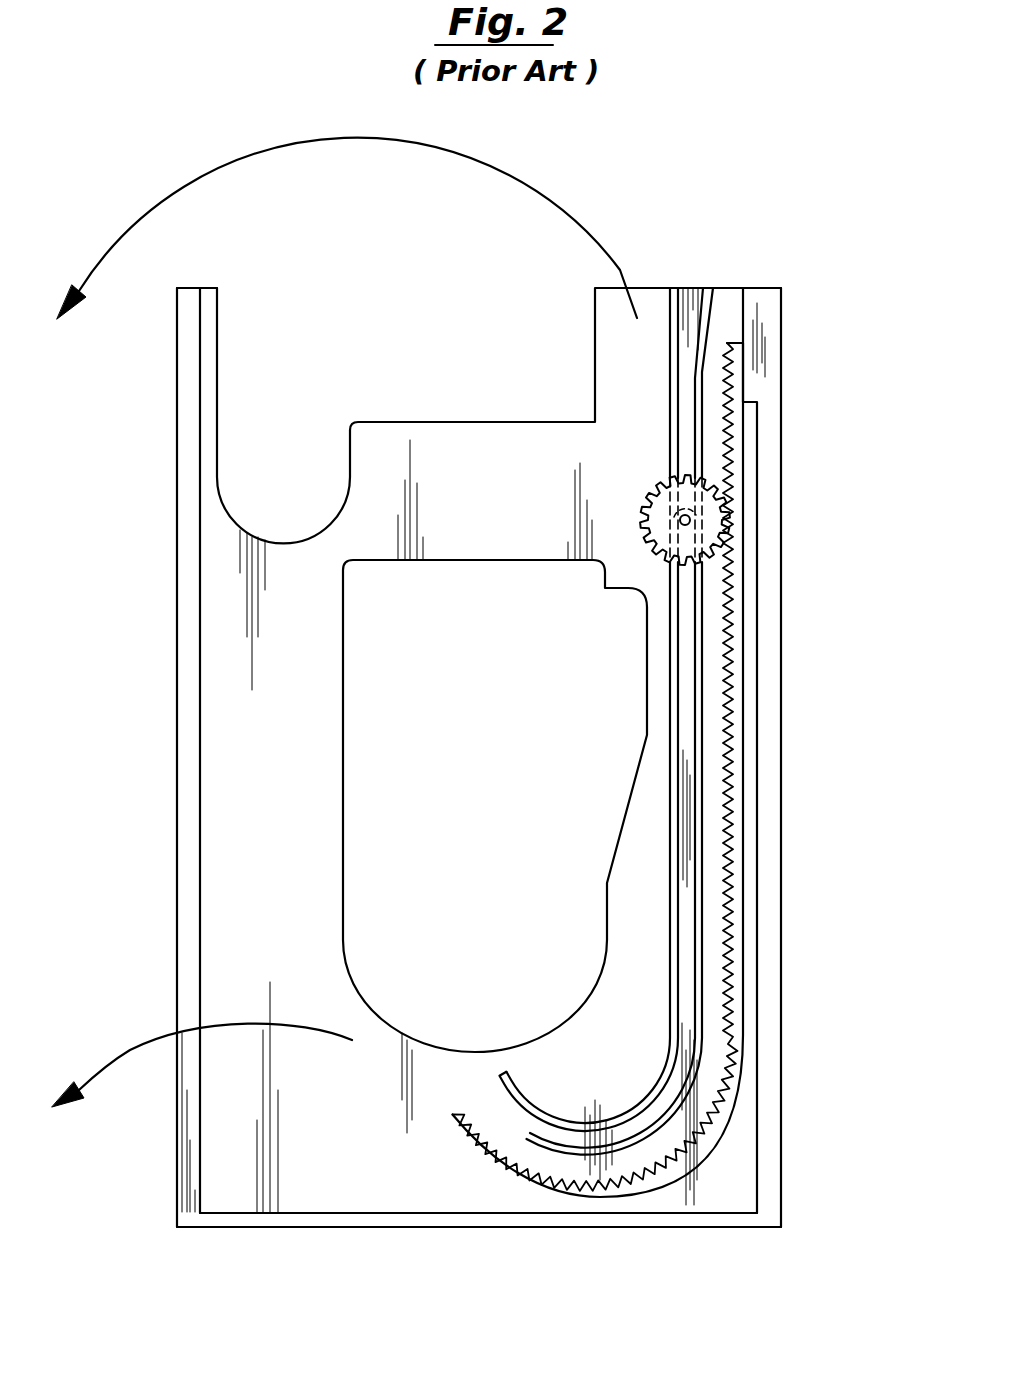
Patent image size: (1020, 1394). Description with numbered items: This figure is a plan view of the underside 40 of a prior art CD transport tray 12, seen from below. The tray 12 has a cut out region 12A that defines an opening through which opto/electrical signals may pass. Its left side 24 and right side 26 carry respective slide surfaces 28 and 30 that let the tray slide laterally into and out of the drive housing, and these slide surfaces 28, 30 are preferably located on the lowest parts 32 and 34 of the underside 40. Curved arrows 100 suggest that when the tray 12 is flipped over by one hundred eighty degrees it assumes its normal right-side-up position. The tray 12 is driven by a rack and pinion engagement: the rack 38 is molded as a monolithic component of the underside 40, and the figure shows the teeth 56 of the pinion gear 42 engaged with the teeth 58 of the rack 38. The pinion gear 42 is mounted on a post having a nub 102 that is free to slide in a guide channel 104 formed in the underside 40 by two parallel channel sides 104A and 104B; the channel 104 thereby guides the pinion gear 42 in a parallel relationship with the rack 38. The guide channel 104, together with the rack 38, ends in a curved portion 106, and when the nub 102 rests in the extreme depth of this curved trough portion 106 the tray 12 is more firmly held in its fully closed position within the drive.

The tray 12 is at (458, 421).
The cut out region 12A is at (647, 669).
The left side 24 is at (782, 945).
The right side 26 is at (177, 883).
The slide surface 28 is at (188, 698).
The slide surface 30 is at (770, 712).
The lowest part 32 is at (186, 557).
The lowest part 34 is at (770, 1063).
The rack 38 is at (737, 582).
The underside 40 is at (523, 482).
The pinion gear 42 is at (658, 508).
The teeth 56 is at (707, 490).
The teeth 58 is at (728, 522).
The arrows 100 is at (213, 167).
The nub 102 is at (676, 545).
The guide channel 104 is at (690, 797).
The channel side 104A is at (672, 855).
The channel side 104B is at (705, 855).
The curved portion 106 is at (623, 1117).